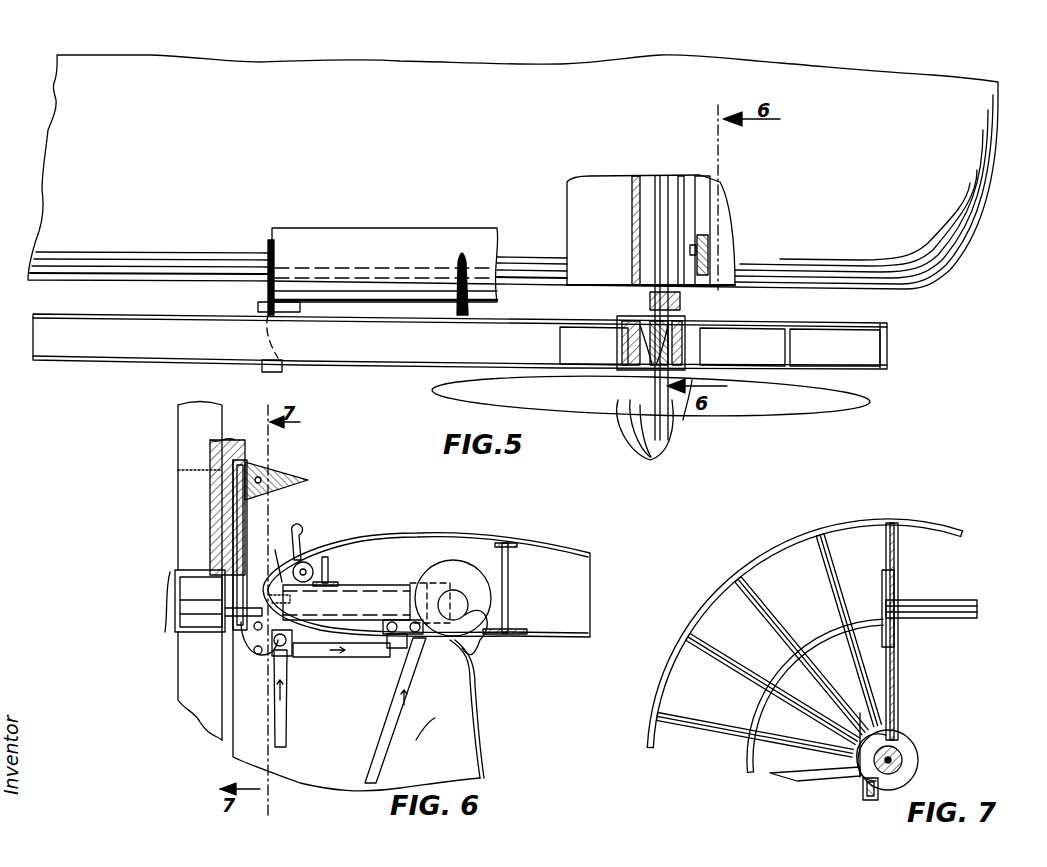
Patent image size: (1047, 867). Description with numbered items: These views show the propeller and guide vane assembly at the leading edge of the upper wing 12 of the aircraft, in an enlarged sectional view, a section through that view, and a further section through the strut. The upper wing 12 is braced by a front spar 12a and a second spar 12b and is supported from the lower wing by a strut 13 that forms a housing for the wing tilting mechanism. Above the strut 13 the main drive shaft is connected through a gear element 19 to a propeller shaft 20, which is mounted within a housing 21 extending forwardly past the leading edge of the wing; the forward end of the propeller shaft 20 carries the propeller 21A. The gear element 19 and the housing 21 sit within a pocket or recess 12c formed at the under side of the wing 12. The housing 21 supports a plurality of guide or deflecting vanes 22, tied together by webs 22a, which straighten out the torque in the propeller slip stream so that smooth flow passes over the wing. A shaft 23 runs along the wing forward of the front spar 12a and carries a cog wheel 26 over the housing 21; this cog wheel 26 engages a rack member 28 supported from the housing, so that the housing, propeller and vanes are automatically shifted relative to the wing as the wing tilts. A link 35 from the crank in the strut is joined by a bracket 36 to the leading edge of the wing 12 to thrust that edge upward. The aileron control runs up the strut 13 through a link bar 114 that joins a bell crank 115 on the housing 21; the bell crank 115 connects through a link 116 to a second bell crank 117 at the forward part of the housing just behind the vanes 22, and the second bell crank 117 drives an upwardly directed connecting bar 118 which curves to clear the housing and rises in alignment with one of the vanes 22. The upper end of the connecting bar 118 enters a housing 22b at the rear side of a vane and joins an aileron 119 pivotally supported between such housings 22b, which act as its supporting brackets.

In FIG. 5, the upper wing 12 is at (945, 286).
In FIG. 6, the upper wing 12 is at (432, 535).
In FIG. 6, the front spar 12a is at (332, 558).
In FIG. 6, the spar 12b is at (508, 548).
In FIG. 6, the pocket or recess 12c is at (458, 570).
In FIG. 6, the strut 13 is at (482, 716).
In FIG. 6, the gear element 19 is at (482, 650).
In FIG. 7, the propeller shaft 20 is at (912, 760).
In FIG. 5, the propeller shaft housing 21 is at (652, 292).
In FIG. 6, the propeller shaft housing 21 is at (365, 602).
In FIG. 7, the propeller shaft housing 21 is at (898, 750).
In FIG. 5, the propeller 21A is at (660, 447).
In FIG. 5, the guide or deflecting vane 22 is at (865, 325).
In FIG. 6, the guide or deflecting vane 22 is at (205, 505).
In FIG. 7, the guide or deflecting vane 22 is at (757, 562).
In FIG. 5, the web 22a is at (705, 340).
In FIG. 6, the web 22a is at (195, 470).
In FIG. 5, the housing 22b is at (285, 275).
In FIG. 6, the housing 22b is at (265, 480).
In FIG. 6, the shaft 23 is at (283, 583).
In FIG. 6, the cog wheel 26 is at (306, 565).
In FIG. 6, the rack member 28 is at (300, 545).
In FIG. 6, the link 35 is at (286, 718).
In FIG. 6, the bracket 36 is at (290, 656).
In FIG. 6, the link bar 114 is at (395, 725).
In FIG. 6, the bell crank 115 is at (378, 652).
In FIG. 7, the bell crank 115 is at (862, 785).
In FIG. 6, the link 116 is at (392, 656).
In FIG. 7, the link 116 is at (876, 800).
In FIG. 6, the second bell crank 117 is at (245, 638).
In FIG. 5, the connecting bar 118 is at (702, 285).
In FIG. 6, the connecting bar 118 is at (236, 522).
In FIG. 7, the connecting bar 118 is at (896, 682).
In FIG. 5, the aileron 119 is at (462, 245).
In FIG. 7, the aileron 119 is at (942, 600).